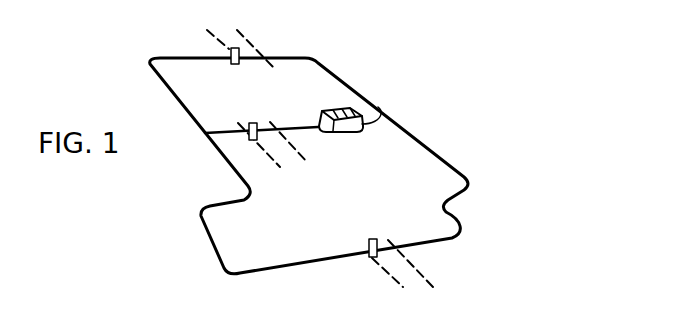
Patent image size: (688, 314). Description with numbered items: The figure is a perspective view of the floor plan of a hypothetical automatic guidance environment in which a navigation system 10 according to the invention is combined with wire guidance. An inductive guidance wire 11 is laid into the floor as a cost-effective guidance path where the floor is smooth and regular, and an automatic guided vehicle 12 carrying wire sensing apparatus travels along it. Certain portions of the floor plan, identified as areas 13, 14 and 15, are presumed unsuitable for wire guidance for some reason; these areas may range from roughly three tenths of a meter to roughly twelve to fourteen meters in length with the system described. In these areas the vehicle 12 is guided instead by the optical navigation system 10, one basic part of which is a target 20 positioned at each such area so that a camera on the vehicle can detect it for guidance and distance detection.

The navigation system 10 is at (355, 151).
The inductive guidance wire 11 is at (417, 134).
The automatic guided vehicle 12 is at (337, 107).
The area 13 is at (266, 43).
The area 14 is at (296, 163).
The area 15 is at (415, 280).
The target 20 is at (232, 47).